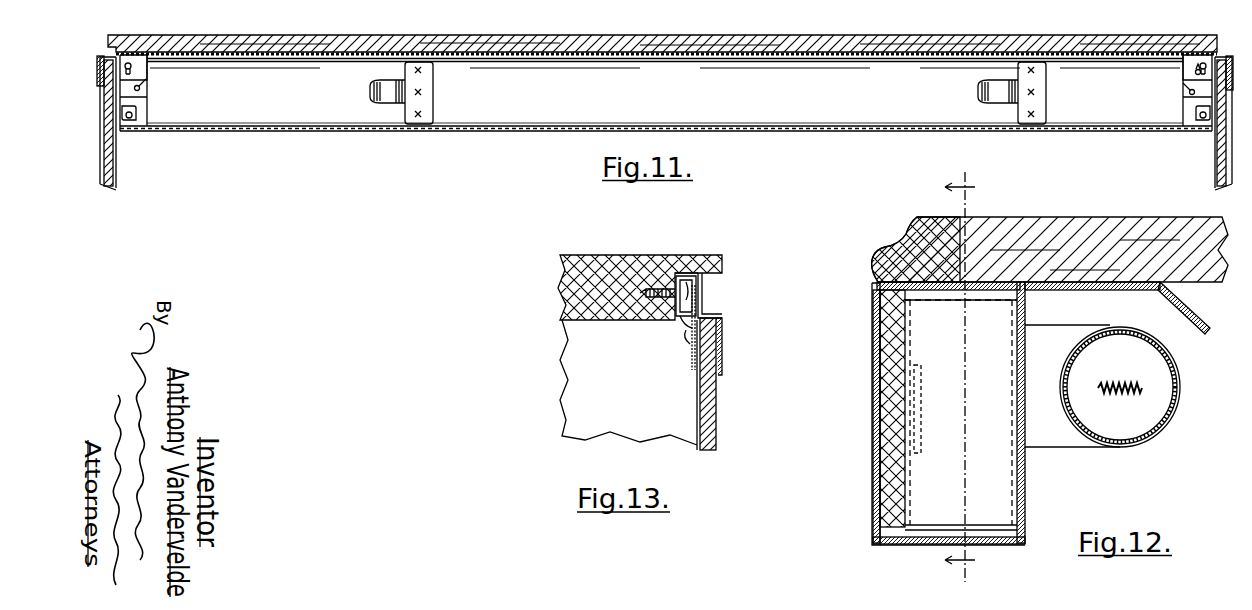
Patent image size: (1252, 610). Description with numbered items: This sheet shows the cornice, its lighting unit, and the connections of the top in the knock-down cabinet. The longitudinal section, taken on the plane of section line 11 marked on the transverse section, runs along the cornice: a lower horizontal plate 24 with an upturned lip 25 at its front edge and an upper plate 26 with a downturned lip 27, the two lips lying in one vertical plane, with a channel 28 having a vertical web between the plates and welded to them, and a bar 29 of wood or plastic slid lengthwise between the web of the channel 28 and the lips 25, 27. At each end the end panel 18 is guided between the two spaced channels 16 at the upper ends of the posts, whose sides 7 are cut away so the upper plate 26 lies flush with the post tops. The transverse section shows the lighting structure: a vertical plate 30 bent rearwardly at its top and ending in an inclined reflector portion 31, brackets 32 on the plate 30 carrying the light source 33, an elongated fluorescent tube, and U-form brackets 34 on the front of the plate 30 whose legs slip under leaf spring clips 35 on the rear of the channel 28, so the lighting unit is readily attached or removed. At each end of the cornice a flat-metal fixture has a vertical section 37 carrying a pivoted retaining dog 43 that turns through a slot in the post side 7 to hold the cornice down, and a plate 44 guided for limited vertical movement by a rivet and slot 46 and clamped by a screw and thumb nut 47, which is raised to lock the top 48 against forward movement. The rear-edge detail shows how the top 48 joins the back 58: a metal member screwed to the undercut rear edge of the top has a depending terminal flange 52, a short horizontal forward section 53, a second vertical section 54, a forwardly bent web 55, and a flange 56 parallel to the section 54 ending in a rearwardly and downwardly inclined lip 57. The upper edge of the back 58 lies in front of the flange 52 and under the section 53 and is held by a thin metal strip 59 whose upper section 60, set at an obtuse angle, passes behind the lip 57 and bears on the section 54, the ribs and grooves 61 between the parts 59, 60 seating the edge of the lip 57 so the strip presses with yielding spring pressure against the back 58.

In FIG. 11, the sides 7 is at (120, 170).
In FIG. 12, the section line 11 is at (956, 375).
In FIG. 11, the spaced channels 16 is at (102, 57).
In FIG. 11, the end panel 18 is at (150, 70).
In FIG. 13, the end panel 18 is at (590, 420).
In FIG. 11, the lower horizontal plate 24 is at (377, 132).
In FIG. 12, the lower horizontal plate 24 is at (926, 549).
In FIG. 12, the upturned lip 25 is at (876, 537).
In FIG. 11, the upper horizontal plate 26 is at (703, 60).
In FIG. 12, the upper horizontal plate 26 is at (985, 291).
In FIG. 12, the downturned lip 27 is at (875, 298).
In FIG. 11, the channel 28 is at (535, 107).
In FIG. 12, the channel 28 is at (905, 350).
In FIG. 12, the bar 29 is at (880, 390).
In FIG. 12, the vertical plate 30 is at (1026, 466).
In FIG. 12, the reflector portion 31 is at (1160, 296).
In FIG. 12, the brackets 32 is at (1045, 336).
In FIG. 12, the light source 33 is at (1143, 441).
In FIG. 12, the U-form brackets 34 is at (990, 490).
In FIG. 11, the leaf spring clips 35 is at (385, 92).
In FIG. 11, the vertical section 37 is at (143, 122).
In FIG. 11, the retaining dog 43 is at (131, 113).
In FIG. 11, the plate 44 is at (138, 62).
In FIG. 11, the rivet and slot 46 is at (1195, 73).
In FIG. 11, the screw and thumb nut 47 is at (1189, 91).
In FIG. 11, the top 48 is at (760, 46).
In FIG. 13, the top 48 is at (600, 265).
In FIG. 12, the top 48 is at (1035, 228).
In FIG. 13, the terminal vertical flange 52 is at (721, 342).
In FIG. 13, the horizontal forward section 53 is at (705, 310).
In FIG. 13, the second vertical section 54 is at (700, 280).
In FIG. 13, the web 55 is at (690, 272).
In FIG. 13, the flange 56 is at (668, 270).
In FIG. 13, the inclined lip 57 is at (680, 322).
In FIG. 13, the back 58 is at (710, 418).
In FIG. 13, the metal longitudinal strip 59 is at (690, 352).
In FIG. 13, the upper section 60 is at (692, 292).
In FIG. 13, the ribs and grooves 61 is at (688, 336).